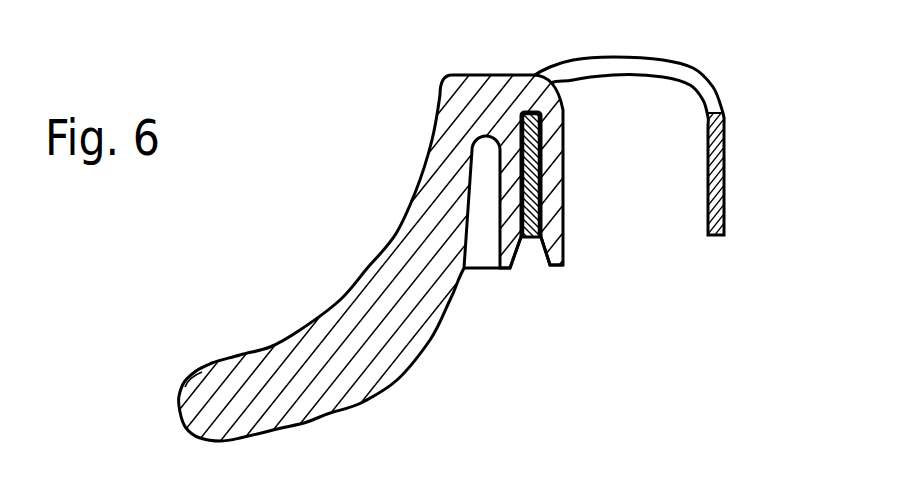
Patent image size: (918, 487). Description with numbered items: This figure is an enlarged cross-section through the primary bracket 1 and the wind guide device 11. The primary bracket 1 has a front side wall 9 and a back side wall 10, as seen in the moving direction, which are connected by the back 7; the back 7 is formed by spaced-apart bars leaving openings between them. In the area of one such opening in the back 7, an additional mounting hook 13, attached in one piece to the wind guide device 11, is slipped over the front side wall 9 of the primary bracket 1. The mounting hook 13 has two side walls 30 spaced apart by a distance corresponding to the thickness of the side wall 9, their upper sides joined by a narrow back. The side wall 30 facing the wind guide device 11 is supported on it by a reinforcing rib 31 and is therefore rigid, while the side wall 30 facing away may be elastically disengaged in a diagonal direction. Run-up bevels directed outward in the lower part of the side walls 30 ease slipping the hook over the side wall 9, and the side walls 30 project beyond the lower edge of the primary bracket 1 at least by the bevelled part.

The primary bracket 1 is at (695, 78).
The back 7 is at (615, 58).
The side wall 9 is at (533, 178).
The side wall 10 is at (722, 184).
The wind guide device 11 is at (328, 340).
The mounting hook 13 is at (505, 83).
The side walls 30 is at (510, 235).
The reinforcing rib 31 is at (478, 242).